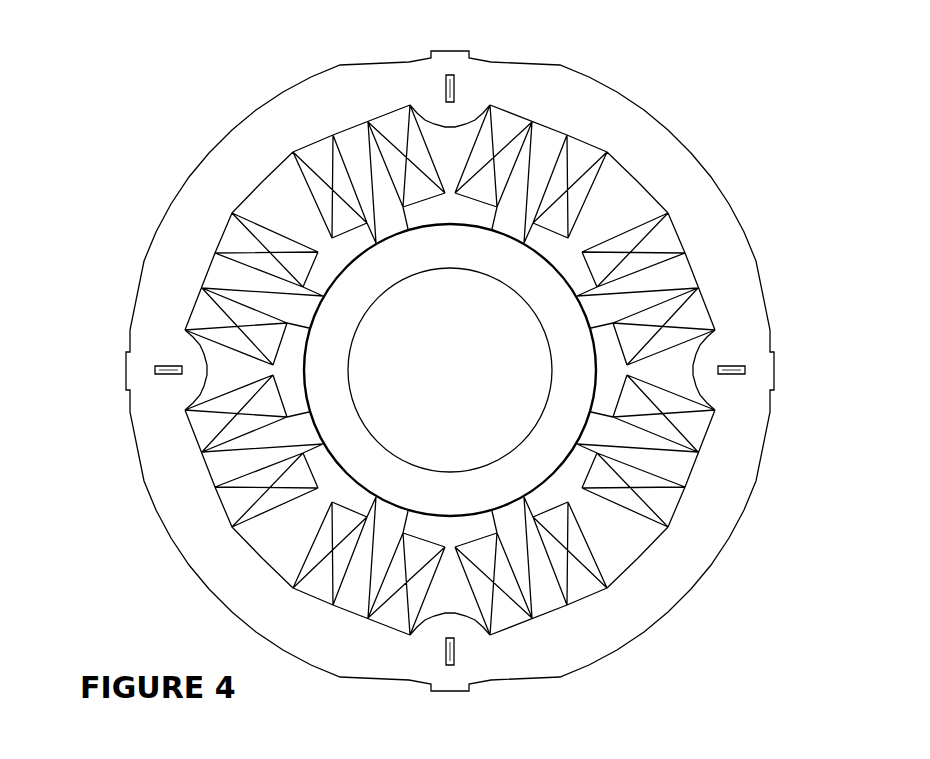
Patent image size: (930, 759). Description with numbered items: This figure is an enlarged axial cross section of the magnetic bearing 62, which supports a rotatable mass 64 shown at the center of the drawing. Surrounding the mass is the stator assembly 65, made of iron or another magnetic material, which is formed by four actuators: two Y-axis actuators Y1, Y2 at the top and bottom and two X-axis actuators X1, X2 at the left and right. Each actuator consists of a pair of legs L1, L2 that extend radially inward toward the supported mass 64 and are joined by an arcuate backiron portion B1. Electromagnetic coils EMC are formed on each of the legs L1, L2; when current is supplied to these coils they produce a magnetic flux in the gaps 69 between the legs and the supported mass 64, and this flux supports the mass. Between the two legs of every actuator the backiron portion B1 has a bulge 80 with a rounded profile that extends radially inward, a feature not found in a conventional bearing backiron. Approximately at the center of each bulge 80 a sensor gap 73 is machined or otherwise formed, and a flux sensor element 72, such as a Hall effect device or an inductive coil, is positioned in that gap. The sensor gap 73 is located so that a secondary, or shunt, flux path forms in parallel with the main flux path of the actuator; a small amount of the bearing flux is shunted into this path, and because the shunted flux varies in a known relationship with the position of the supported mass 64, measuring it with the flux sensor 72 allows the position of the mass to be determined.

The magnetic bearing 62 is at (212, 104).
The rotatable mass 64 is at (530, 305).
The stator assembly 65 is at (604, 84).
The gaps 69 is at (430, 517).
The flux sensor element 72 is at (168, 366).
The sensor gap 73 is at (154, 370).
The bulge 80 is at (437, 126).
The leg L1 is at (436, 378).
The leg L2 is at (437, 373).
The electromagnetic coils EMC is at (236, 233).
The backiron portion B1 is at (400, 70).
The Y-axis actuator Y1 is at (556, 46).
The Y-axis actuator Y2 is at (508, 710).
The X-axis actuator X1 is at (80, 400).
The X-axis actuator X2 is at (797, 434).